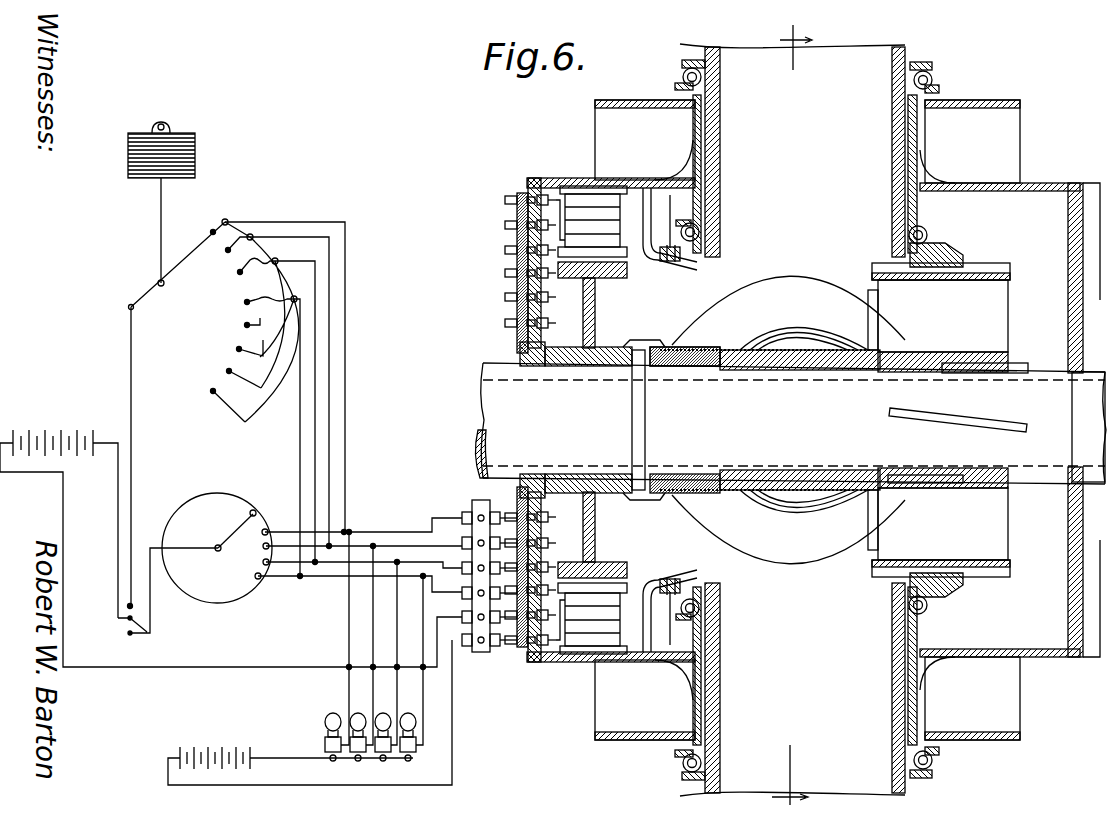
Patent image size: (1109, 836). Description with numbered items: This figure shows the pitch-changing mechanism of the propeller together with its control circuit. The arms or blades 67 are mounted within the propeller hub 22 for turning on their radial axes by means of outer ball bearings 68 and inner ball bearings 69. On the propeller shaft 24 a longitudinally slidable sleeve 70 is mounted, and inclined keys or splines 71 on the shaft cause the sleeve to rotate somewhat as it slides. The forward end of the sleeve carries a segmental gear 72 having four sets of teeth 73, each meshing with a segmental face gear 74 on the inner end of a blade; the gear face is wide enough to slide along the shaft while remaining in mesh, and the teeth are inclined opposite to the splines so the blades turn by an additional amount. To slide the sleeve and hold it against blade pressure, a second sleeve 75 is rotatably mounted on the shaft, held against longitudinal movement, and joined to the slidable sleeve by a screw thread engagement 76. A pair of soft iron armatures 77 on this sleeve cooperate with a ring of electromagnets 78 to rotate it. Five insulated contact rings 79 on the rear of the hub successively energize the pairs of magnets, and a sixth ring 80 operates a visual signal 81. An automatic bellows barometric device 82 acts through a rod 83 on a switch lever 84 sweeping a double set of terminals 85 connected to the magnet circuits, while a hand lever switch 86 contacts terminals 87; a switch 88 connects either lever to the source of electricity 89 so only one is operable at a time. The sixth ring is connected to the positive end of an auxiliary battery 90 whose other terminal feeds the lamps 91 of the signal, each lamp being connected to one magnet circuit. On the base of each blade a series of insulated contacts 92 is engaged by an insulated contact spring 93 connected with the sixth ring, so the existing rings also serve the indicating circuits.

The housing casing 22 is at (1035, 180).
The propeller shaft 24 is at (488, 398).
The arms or blades 67 is at (706, 48).
The outer ball bearings 68 is at (931, 78).
The inner ball bearings 69 is at (700, 242).
The longitudinally slidable sleeve 70 is at (770, 497).
The inclined keys or splines 71 is at (925, 485).
The segmental gear 72 is at (1008, 310).
The sets of teeth 73 is at (700, 257).
The segmental face gear 74 is at (950, 258).
The sleeve 75 is at (700, 348).
The screw thread engagement 76 is at (730, 497).
The soft iron armatures 77 is at (612, 258).
The electromagnets 78 is at (648, 262).
The insulated contact rings 79 is at (516, 322).
The sixth ring 80 is at (515, 200).
The visual signal 81 is at (373, 761).
The automatic bellows barometric device 82 is at (196, 165).
The rod 83 is at (162, 222).
The switch lever 84 is at (185, 258).
The terminals 85 is at (246, 304).
The hand lever switch 86 is at (217, 548).
The terminals 87 is at (258, 572).
The switch 88 is at (140, 620).
The source of electricity 89 is at (63, 432).
The auxiliary battery 90 is at (222, 752).
The lamps 91 is at (345, 718).
The insulated contacts 92 is at (670, 596).
The insulated contact spring 93 is at (676, 265).